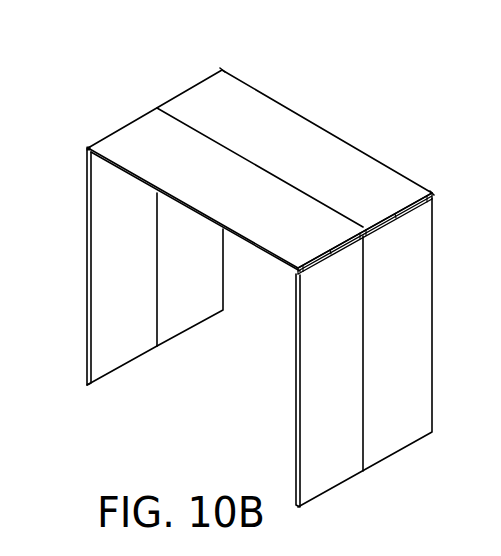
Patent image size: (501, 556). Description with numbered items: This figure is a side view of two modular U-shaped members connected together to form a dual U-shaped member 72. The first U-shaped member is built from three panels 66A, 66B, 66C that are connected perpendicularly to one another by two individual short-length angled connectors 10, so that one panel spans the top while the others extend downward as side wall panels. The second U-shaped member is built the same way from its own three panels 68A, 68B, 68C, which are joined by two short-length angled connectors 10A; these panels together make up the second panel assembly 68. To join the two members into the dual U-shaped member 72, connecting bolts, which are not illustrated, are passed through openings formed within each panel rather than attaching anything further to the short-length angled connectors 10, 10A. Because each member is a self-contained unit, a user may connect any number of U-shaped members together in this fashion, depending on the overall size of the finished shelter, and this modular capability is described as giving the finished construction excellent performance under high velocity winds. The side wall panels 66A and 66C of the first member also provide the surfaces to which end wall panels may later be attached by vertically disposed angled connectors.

The short-length angled connector 10 is at (87, 148).
The short-length angled connector 10A is at (222, 70).
The dual U-shaped member 72 is at (370, 106).
The panel 66A is at (323, 445).
The panel 66B is at (127, 135).
The panel 66C is at (115, 303).
The second panel 68 is at (397, 352).
The panel 68A is at (390, 413).
The panel 68B is at (368, 173).
The panel 68C is at (182, 278).